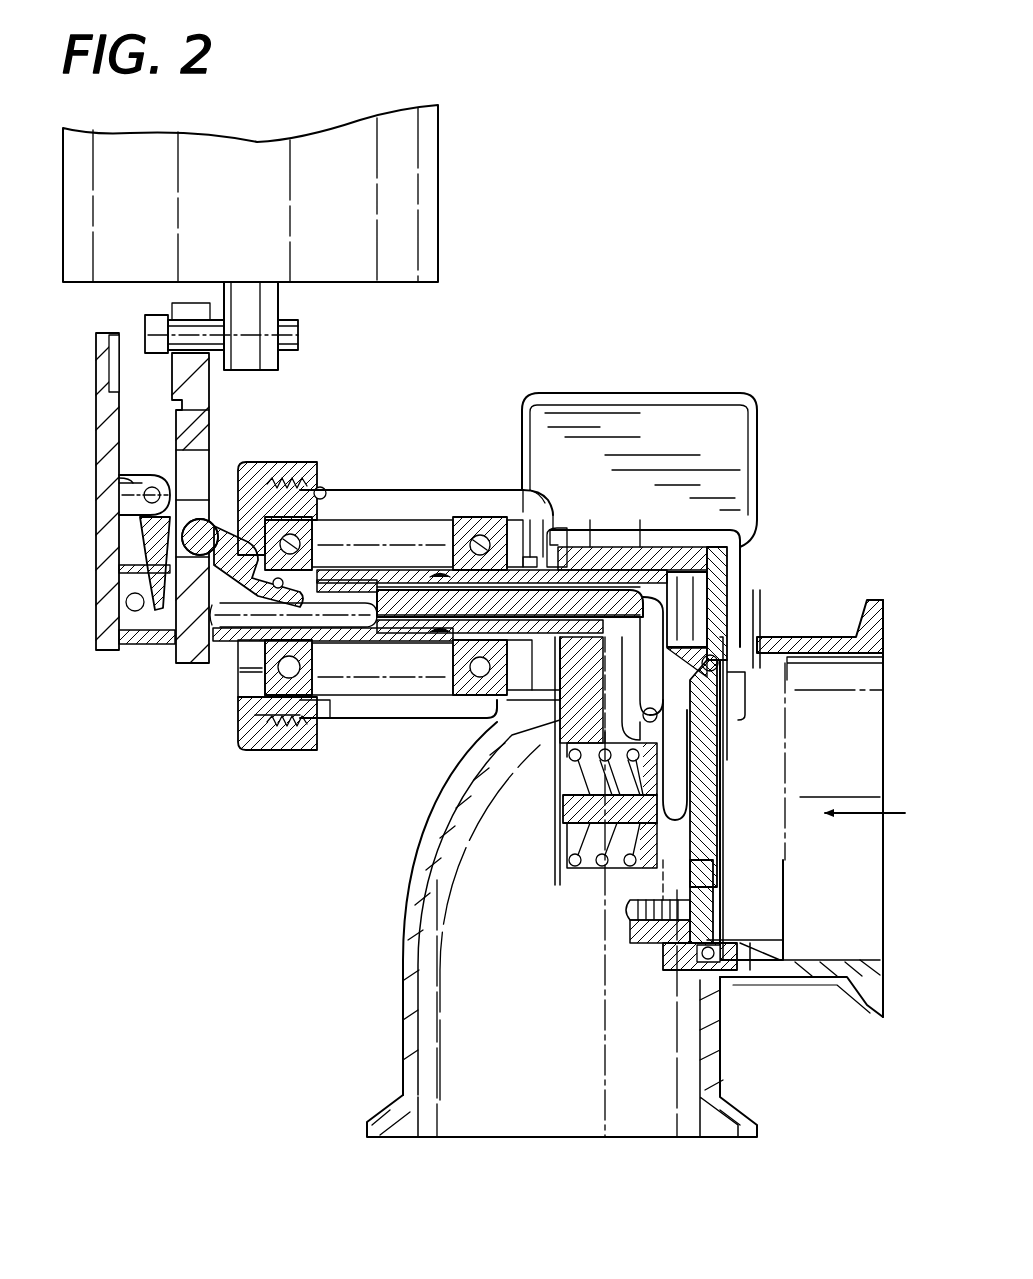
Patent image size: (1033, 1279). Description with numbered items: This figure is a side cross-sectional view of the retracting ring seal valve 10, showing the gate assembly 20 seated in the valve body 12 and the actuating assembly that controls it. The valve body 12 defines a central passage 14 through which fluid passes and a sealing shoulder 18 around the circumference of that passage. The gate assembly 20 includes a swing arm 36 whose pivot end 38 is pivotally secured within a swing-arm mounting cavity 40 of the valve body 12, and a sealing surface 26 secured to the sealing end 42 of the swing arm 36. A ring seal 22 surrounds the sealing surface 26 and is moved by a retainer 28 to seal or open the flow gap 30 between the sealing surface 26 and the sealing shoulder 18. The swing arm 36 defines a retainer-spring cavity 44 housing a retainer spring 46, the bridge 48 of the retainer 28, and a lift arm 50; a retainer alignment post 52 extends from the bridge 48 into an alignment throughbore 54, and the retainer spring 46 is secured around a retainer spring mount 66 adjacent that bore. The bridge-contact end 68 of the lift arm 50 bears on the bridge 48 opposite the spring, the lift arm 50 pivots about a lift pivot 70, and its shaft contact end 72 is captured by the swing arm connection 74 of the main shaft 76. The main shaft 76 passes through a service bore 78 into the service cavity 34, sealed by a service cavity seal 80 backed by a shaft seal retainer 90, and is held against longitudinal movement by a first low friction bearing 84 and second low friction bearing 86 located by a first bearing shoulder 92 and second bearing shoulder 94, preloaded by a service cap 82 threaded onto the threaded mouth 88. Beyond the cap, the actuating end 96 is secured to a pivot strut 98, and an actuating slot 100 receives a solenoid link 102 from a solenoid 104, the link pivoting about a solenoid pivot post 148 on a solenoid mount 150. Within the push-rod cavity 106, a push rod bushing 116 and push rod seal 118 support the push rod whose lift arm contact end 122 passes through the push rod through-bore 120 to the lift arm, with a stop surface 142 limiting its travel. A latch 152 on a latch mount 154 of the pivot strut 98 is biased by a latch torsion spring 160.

The retracting ring seal valve 10 is at (618, 225).
The valve body 12 is at (757, 537).
The central passage 14 is at (775, 760).
The sealing shoulder 18 is at (778, 660).
The gate assembly 20 is at (540, 767).
The ring seal 22 is at (720, 945).
The sealing surface 26 is at (783, 688).
The retainer 28 is at (668, 968).
The flow gap 30 is at (724, 907).
The service cavity 34 is at (356, 505).
The swing arm 36 is at (543, 768).
The pivot end 38 is at (728, 545).
The swing-arm mounting cavity 40 is at (722, 550).
The sealing end 42 is at (713, 877).
The retainer-spring cavity 44 is at (690, 830).
The retainer spring 46 is at (592, 885).
The bridge 48 is at (720, 866).
The lift arm 50 is at (655, 622).
The retainer alignment post 52 is at (553, 803).
The alignment throughbore 54 is at (547, 830).
The retainer spring mount 66 is at (560, 870).
The bridge-contact end 68 is at (685, 765).
The lift pivot 70 is at (755, 640).
The shaft contact end 72 is at (720, 587).
The swing arm connection 74 is at (655, 547).
The main shaft 76 is at (572, 555).
The service bore 78 is at (540, 555).
The service cavity seal 80 is at (530, 555).
The service cap 82 is at (243, 708).
The first low friction bearing 84 is at (322, 755).
The second low friction bearing 86 is at (460, 698).
The threaded mouth 88 is at (322, 490).
The shaft seal retainer 90 is at (538, 550).
The first bearing shoulder 92 is at (313, 660).
The second bearing shoulder 94 is at (440, 520).
The actuating end 96 is at (140, 644).
The pivot strut 98 is at (107, 617).
The actuating slot 100 is at (222, 622).
The solenoid link 102 is at (200, 415).
The solenoid 104 is at (427, 167).
The push-rod cavity 106 is at (325, 723).
The push rod bushing 116 is at (395, 588).
The push rod seal 118 is at (387, 628).
The push rod through-bore 120 is at (590, 560).
The lift arm contact end 122 is at (640, 562).
The stop surface 142 is at (313, 587).
The solenoid pivot post 148 is at (298, 337).
The solenoid mount 150 is at (268, 297).
The latch 152 is at (145, 540).
The latch mount 154 is at (130, 496).
The latch torsion spring 160 is at (127, 474).